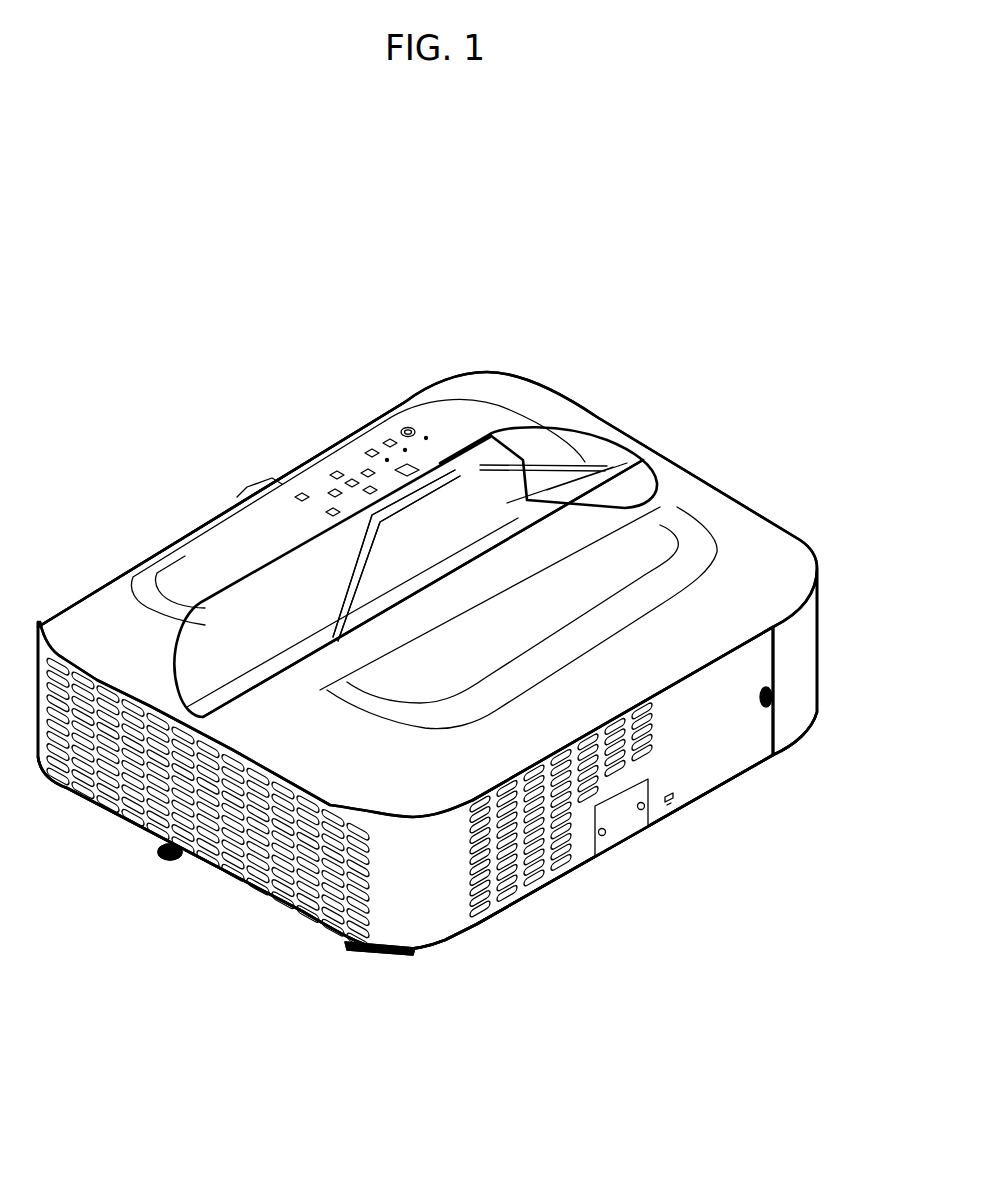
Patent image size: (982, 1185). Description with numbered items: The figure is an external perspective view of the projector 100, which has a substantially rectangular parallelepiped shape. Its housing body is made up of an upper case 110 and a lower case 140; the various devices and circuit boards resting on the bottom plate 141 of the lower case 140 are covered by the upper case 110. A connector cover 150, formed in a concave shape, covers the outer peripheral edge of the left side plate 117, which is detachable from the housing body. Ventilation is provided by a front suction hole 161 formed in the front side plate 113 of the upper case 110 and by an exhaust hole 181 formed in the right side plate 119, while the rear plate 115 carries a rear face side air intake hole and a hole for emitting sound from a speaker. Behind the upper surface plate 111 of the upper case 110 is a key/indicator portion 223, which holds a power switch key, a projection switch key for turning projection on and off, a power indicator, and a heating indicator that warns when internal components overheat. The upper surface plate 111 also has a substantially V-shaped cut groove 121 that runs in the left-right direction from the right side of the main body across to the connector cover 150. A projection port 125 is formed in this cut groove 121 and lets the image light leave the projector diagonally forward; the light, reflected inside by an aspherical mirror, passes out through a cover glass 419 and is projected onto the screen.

The projector 100 is at (527, 282).
The upper case 110 is at (435, 700).
The upper surface plate 111 is at (642, 537).
The front side plate 113 is at (707, 745).
The rear plate 115 is at (350, 418).
The left side plate 117 is at (773, 730).
The right side plate 119 is at (200, 860).
The cut groove 121 is at (298, 652).
The projection port 125 is at (417, 530).
The cover glass 419 is at (391, 469).
The lower case 140 is at (304, 975).
The bottom plate 141 is at (392, 952).
The connector cover 150 is at (510, 403).
The front suction hole 161 is at (530, 863).
The exhaust hole 181 is at (293, 920).
The key/indicator portion 223 is at (316, 485).